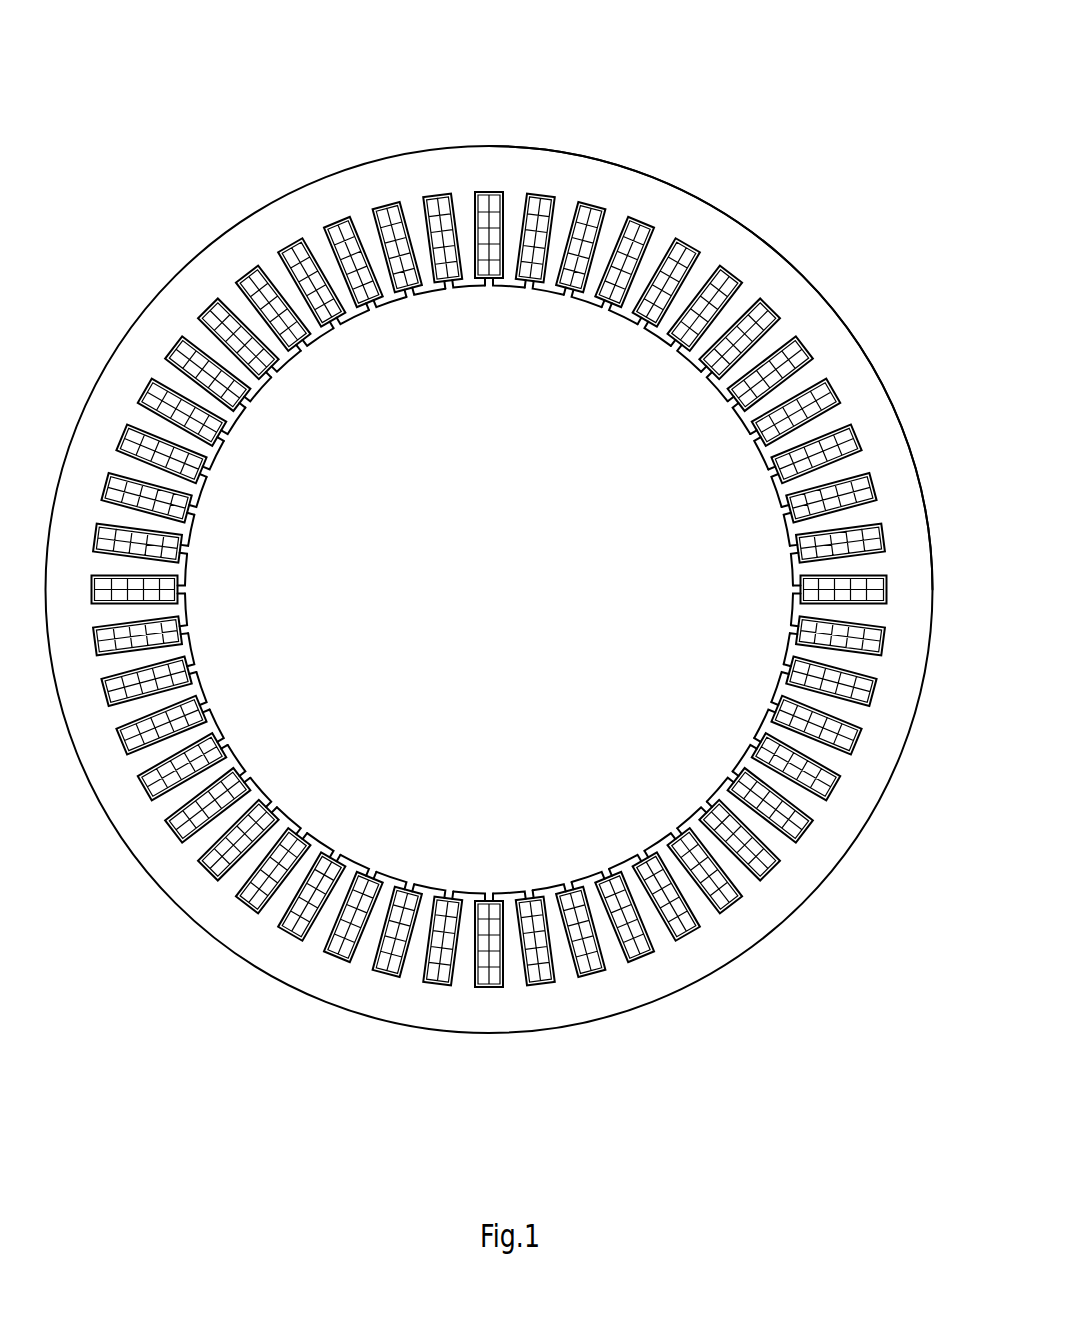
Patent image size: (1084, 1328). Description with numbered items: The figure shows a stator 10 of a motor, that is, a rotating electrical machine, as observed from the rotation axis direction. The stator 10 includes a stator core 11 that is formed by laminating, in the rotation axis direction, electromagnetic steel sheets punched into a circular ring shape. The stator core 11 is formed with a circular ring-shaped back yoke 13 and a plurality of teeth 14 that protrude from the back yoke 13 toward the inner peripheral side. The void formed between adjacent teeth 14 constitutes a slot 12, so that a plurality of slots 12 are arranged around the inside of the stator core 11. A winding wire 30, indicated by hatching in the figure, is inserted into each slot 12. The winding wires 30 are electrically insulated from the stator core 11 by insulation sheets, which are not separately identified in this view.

The stator 10 is at (705, 121).
The stator core 11 is at (495, 162).
The slot 12 is at (731, 312).
The back yoke 13 is at (690, 218).
The tooth 14 is at (757, 297).
The winding wire 30 is at (812, 395).